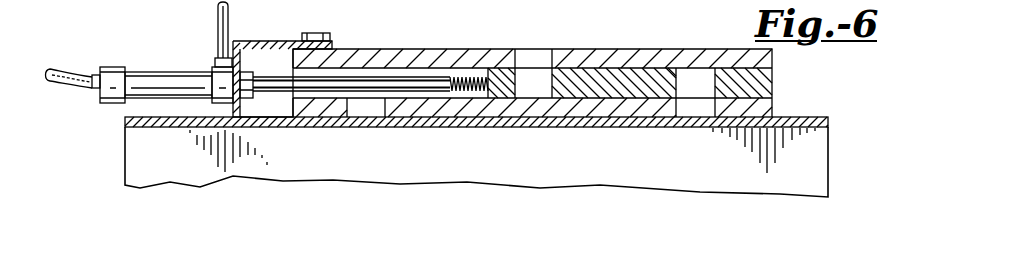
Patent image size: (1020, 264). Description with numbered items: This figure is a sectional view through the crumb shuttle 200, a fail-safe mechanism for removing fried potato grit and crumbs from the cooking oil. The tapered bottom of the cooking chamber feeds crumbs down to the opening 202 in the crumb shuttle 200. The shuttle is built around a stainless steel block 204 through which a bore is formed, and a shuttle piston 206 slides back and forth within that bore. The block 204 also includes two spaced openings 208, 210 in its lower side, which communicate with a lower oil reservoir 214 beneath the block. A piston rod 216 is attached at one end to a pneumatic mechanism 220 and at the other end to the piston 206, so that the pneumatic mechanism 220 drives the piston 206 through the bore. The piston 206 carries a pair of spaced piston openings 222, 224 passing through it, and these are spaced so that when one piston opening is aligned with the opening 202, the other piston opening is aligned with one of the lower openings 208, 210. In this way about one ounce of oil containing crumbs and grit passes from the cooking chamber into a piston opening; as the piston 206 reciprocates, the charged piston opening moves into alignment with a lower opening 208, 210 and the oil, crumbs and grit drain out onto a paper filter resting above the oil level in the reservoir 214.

The crumb shuttle 200 is at (782, 69).
The opening 202 is at (524, 50).
The stainless steel block 204 is at (392, 50).
The shuttle piston 206 is at (446, 95).
The opening 208 is at (356, 108).
The opening 210 is at (682, 102).
The lower oil reservoir 214 is at (795, 116).
The piston rod 216 is at (262, 78).
The pneumatic mechanism 220 is at (169, 72).
The piston opening 222 is at (550, 80).
The piston opening 224 is at (685, 69).